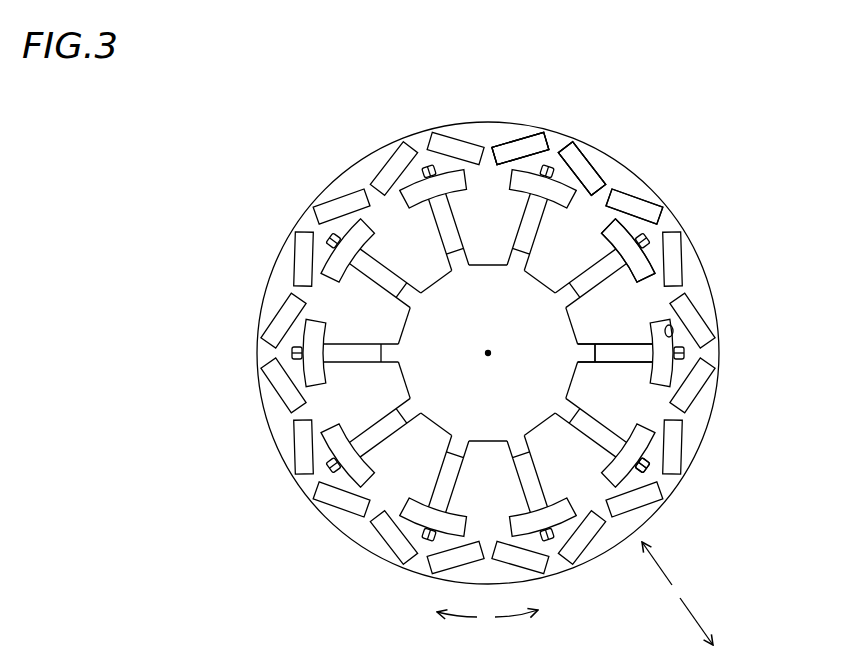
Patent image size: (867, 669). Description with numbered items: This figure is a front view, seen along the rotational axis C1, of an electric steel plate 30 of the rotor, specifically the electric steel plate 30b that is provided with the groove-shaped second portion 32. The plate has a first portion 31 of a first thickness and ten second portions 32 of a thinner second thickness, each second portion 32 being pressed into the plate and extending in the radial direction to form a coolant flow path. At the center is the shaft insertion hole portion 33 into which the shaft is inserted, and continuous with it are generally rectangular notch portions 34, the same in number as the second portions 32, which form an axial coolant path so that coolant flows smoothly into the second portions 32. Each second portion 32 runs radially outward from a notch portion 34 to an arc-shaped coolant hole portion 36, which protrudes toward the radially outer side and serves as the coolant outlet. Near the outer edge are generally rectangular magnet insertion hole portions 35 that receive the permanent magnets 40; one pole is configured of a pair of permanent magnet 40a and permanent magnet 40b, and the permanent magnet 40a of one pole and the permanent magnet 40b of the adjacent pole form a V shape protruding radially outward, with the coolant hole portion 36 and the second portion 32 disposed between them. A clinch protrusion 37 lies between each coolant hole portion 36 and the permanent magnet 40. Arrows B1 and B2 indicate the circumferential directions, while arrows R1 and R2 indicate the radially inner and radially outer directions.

The electric steel plate 30 is at (255, 147).
The electric steel plate 30b is at (488, 353).
The first portion 31 is at (619, 392).
The second portion 32 is at (632, 347).
The shaft insertion hole portion 33 is at (572, 326).
The notch portion 34 is at (585, 352).
The magnet insertion hole portion 35 is at (633, 310).
The coolant hole portion 36 is at (670, 328).
The clinch protrusion 37 is at (649, 469).
The permanent magnet 40 is at (768, 158).
The permanent magnet 40a is at (590, 170).
The permanent magnet 40b is at (520, 147).
The rotational axis C1 is at (482, 348).
The arrow R1 is at (674, 563).
The arrow R2 is at (707, 619).
The arrow B1 is at (460, 633).
The arrow B2 is at (515, 632).